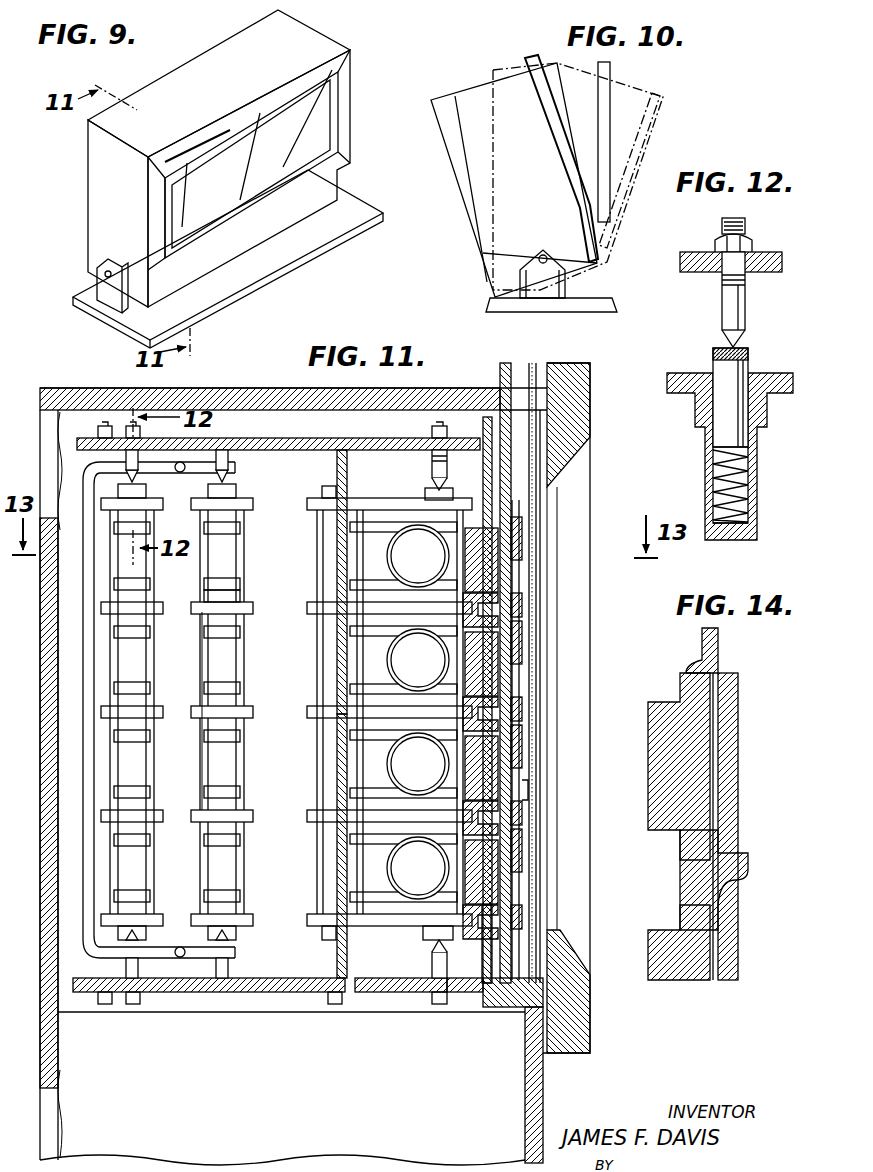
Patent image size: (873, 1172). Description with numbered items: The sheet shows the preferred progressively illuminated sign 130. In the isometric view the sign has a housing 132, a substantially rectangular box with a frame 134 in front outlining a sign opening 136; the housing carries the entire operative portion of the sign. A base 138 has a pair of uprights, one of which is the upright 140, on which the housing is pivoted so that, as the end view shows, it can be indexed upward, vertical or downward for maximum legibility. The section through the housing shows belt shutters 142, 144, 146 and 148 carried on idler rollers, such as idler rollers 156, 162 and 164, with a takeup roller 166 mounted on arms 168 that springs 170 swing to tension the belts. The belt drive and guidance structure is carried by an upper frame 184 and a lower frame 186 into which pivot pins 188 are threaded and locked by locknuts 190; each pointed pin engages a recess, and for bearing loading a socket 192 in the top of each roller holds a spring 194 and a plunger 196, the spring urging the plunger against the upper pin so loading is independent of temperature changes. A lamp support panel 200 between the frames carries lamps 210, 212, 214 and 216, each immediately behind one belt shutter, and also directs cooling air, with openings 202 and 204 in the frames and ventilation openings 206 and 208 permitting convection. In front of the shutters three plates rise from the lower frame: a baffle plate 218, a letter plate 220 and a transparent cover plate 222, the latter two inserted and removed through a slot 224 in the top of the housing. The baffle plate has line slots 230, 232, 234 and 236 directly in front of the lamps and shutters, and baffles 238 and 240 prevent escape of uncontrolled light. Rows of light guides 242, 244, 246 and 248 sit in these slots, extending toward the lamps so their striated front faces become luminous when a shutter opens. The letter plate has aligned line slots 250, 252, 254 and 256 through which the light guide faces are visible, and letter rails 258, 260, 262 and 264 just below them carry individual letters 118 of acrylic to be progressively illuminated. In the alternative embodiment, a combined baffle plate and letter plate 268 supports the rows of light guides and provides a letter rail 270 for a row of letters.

In FIG. 14, the letter 118 is at (740, 754).
In FIG. 11, the letter 118 is at (525, 540).
In FIG. 9, the progressively illuminated sign 130 is at (362, 70).
In FIG. 10, the progressively illuminated sign 130 is at (688, 113).
In FIG. 11, the progressively illuminated sign 130 is at (268, 388).
In FIG. 9, the housing 132 is at (105, 191).
In FIG. 10, the housing 132 is at (456, 177).
In FIG. 11, the housing 132 is at (432, 392).
In FIG. 9, the frame 134 is at (343, 98).
In FIG. 10, the frame 134 is at (546, 60).
In FIG. 11, the frame 134 is at (575, 405).
In FIG. 9, the sign opening 136 is at (312, 140).
In FIG. 11, the sign opening 136 is at (540, 493).
In FIG. 9, the base 138 is at (305, 240).
In FIG. 10, the base 138 is at (601, 300).
In FIG. 9, the upright 140 is at (108, 295).
In FIG. 10, the upright 140 is at (557, 296).
In FIG. 11, the belt shutter 142 is at (246, 552).
In FIG. 11, the belt shutter 144 is at (246, 672).
In FIG. 11, the belt shutter 146 is at (246, 764).
In FIG. 11, the belt shutter 148 is at (246, 862).
In FIG. 12, the idler roller 156 is at (780, 374).
In FIG. 11, the idler roller 156 is at (202, 796).
In FIG. 11, the idler roller 162 is at (423, 934).
In FIG. 11, the idler roller 164 is at (322, 934).
In FIG. 11, the takeup roller 166 is at (228, 598).
In FIG. 11, the arm 168 is at (236, 467).
In FIG. 11, the spring 170 is at (181, 473).
In FIG. 12, the upper frame 184 is at (768, 256).
In FIG. 11, the upper frame 184 is at (243, 440).
In FIG. 11, the lower frame 186 is at (200, 995).
In FIG. 12, the pivot pin 188 is at (748, 302).
In FIG. 11, the pivot pin 188 is at (432, 466).
In FIG. 12, the locknut 190 is at (757, 234).
In FIG. 11, the locknut 190 is at (432, 432).
In FIG. 12, the socket 192 is at (748, 486).
In FIG. 12, the spring 194 is at (716, 474).
In FIG. 12, the plunger 196 is at (716, 362).
In FIG. 11, the lamp support panel 200 is at (320, 872).
In FIG. 11, the opening 202 is at (344, 994).
In FIG. 11, the opening 204 is at (346, 448).
In FIG. 11, the ventilation opening 206 is at (62, 1108).
In FIG. 11, the ventilation opening 208 is at (70, 418).
In FIG. 11, the lamp 210 is at (404, 527).
In FIG. 11, the lamp 212 is at (437, 686).
In FIG. 11, the lamp 214 is at (437, 790).
In FIG. 11, the lamp 216 is at (437, 894).
In FIG. 11, the baffle plate 218 is at (468, 997).
In FIG. 11, the letter plate 220 is at (508, 1010).
In FIG. 11, the transparent cover plate 222 is at (536, 860).
In FIG. 11, the slot 224 is at (514, 390).
In FIG. 11, the line slot 230 is at (485, 528).
In FIG. 11, the line slot 232 is at (482, 650).
In FIG. 11, the line slot 234 is at (482, 752).
In FIG. 11, the line slot 236 is at (482, 856).
In FIG. 11, the baffle 238 is at (528, 790).
In FIG. 11, the baffle 240 is at (482, 935).
In FIG. 14, the row of light guides 242 is at (672, 808).
In FIG. 11, the row of light guides 242 is at (522, 545).
In FIG. 11, the row of light guides 244 is at (522, 645).
In FIG. 14, the row of light guides 246 is at (668, 965).
In FIG. 11, the row of light guides 246 is at (522, 748).
In FIG. 11, the row of light guides 248 is at (522, 856).
In FIG. 11, the line slot 250 is at (498, 598).
In FIG. 11, the line slot 252 is at (498, 702).
In FIG. 11, the line slot 254 is at (498, 806).
In FIG. 11, the line slot 256 is at (498, 910).
In FIG. 11, the letter rail 258 is at (522, 605).
In FIG. 11, the letter rail 260 is at (522, 708).
In FIG. 11, the letter rail 262 is at (522, 812).
In FIG. 11, the letter rail 264 is at (522, 915).
In FIG. 14, the combined baffle plate and letter plate 268 is at (712, 655).
In FIG. 14, the letter rail 270 is at (750, 870).